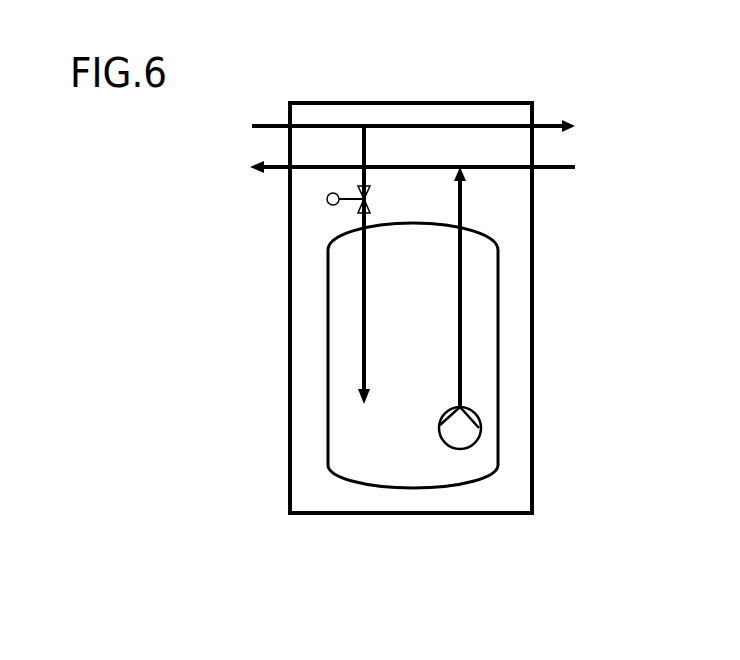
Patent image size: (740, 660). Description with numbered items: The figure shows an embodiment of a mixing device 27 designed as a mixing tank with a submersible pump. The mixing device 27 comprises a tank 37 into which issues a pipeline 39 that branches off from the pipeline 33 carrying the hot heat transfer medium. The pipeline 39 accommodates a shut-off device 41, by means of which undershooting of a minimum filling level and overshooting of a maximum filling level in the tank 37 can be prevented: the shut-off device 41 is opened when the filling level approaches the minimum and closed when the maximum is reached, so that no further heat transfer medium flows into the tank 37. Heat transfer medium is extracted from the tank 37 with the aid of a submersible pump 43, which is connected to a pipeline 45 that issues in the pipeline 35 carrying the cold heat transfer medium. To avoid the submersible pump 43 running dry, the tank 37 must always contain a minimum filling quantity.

The mixing device 27 is at (535, 218).
The pipeline carrying the hot heat transfer medium 33 is at (400, 124).
The pipeline carrying the cold heat transfer medium 35 is at (493, 165).
The tank 37 is at (328, 343).
The pipeline 39 is at (360, 370).
The shut-off device 41 is at (327, 200).
The submersible pump 43 is at (482, 418).
The pipeline 45 is at (462, 298).